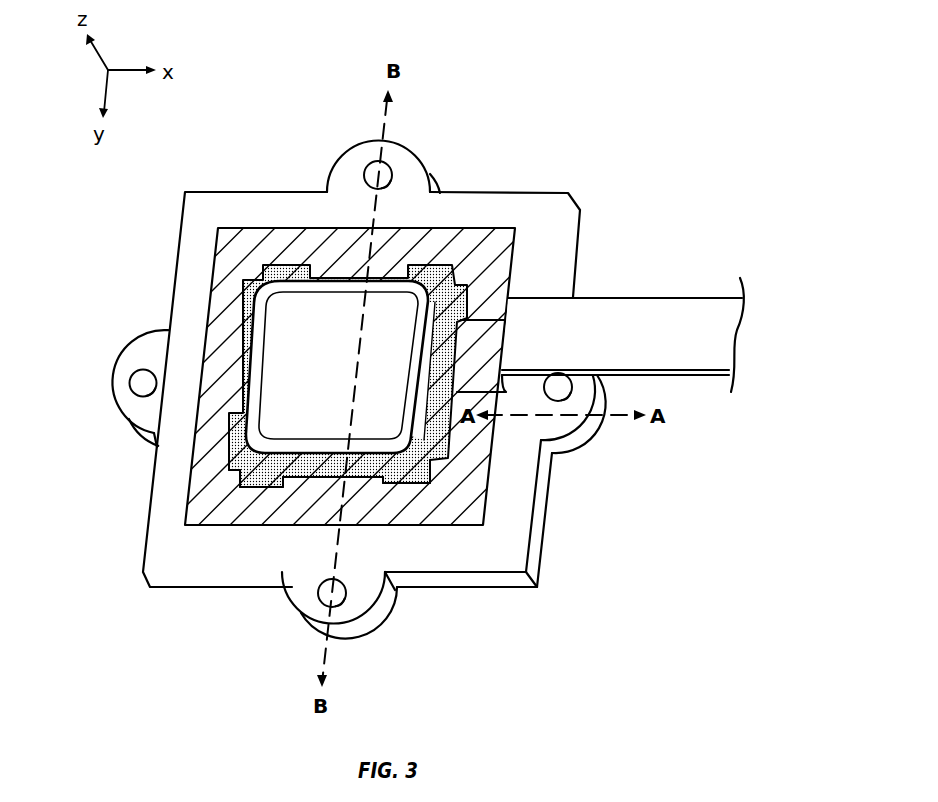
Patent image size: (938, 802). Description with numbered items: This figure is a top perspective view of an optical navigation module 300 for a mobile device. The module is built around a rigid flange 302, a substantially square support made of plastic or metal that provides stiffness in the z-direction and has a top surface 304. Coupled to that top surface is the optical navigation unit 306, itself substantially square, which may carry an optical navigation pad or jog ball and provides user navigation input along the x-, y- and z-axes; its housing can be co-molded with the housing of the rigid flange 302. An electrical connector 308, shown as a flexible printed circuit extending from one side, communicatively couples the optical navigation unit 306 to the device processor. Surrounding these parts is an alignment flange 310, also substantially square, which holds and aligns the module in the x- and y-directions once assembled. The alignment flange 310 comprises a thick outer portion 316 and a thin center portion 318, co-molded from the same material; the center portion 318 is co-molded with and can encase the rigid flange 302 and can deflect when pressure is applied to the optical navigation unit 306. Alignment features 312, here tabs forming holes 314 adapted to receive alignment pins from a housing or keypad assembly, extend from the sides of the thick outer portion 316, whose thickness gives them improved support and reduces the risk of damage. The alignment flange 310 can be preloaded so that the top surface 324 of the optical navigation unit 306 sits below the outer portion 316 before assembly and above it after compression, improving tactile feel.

The optical navigation module 300 is at (393, 367).
The rigid flange 302 is at (273, 446).
The top surface 304 is at (250, 487).
The optical navigation unit 306 is at (393, 393).
The electrical connector 308 is at (567, 317).
The alignment flange 310 is at (172, 283).
The alignment features 312 is at (420, 153).
The holes 314 is at (367, 168).
The thick outer portion 316 is at (522, 473).
The thin center portion 318 is at (453, 503).
The top surface of the optical navigation unit 324 is at (303, 348).